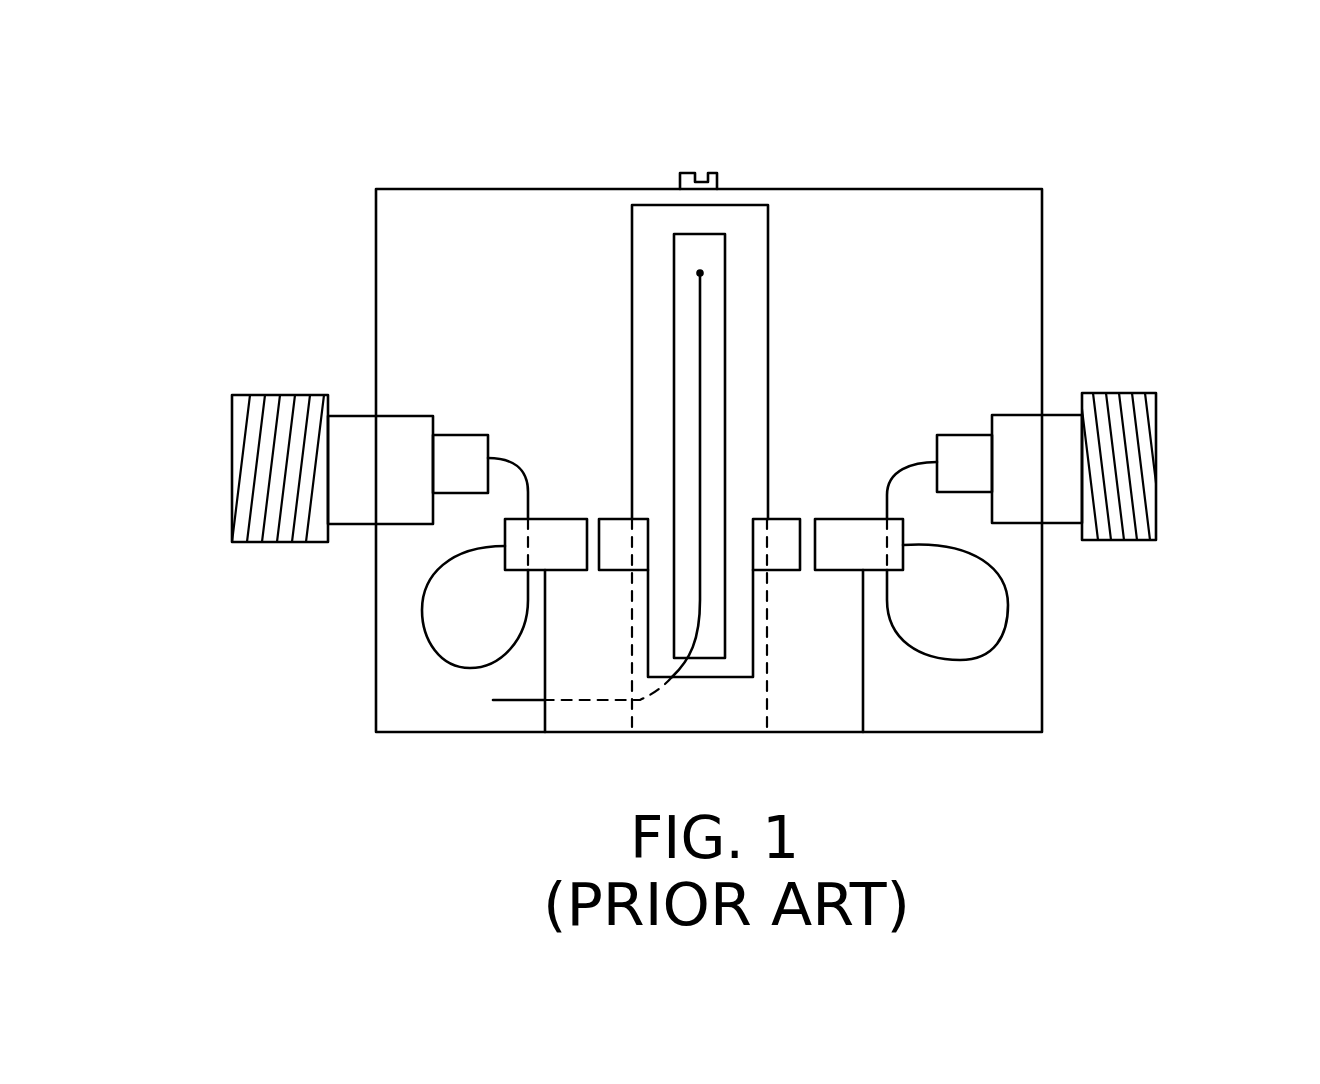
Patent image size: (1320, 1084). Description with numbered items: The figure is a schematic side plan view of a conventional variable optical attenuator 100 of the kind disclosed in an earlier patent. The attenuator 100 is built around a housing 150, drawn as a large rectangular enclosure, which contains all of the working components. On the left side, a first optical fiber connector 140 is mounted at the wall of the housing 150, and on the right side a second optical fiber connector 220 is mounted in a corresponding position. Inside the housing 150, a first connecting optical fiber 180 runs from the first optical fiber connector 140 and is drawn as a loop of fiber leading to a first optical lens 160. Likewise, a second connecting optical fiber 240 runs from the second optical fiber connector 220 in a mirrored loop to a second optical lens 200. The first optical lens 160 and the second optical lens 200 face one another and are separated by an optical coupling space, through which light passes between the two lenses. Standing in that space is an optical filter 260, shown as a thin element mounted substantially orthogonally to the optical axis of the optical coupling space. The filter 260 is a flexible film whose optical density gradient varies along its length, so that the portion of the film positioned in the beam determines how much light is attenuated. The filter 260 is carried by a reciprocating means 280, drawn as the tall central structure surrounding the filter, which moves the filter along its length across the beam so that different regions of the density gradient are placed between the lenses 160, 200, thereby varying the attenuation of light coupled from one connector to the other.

The variable optical attenuator 100 is at (1187, 118).
The first optical fiber connector 140 is at (285, 395).
The housing 150 is at (1042, 617).
The first optical lens 160 is at (610, 518).
The first connecting optical fiber 180 is at (435, 653).
The second optical lens 200 is at (787, 518).
The second optical fiber connector 220 is at (1117, 402).
The second connecting optical fiber 240 is at (978, 657).
The optical filter 260 is at (700, 373).
The reciprocating means 280 is at (768, 297).